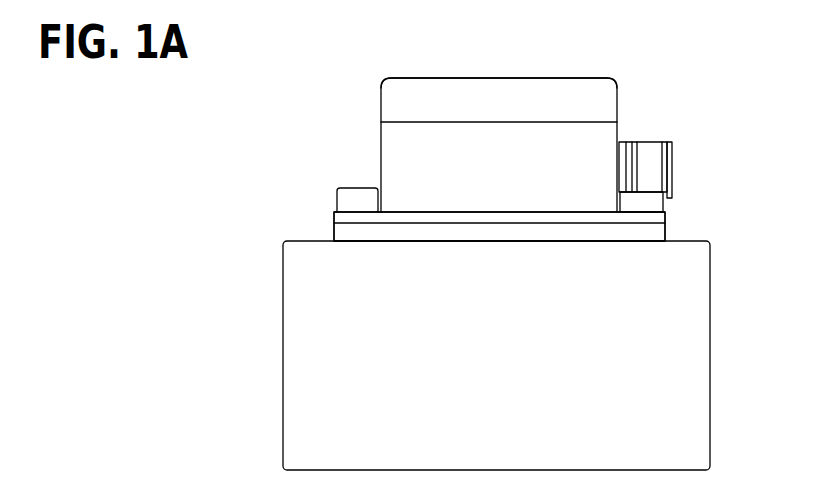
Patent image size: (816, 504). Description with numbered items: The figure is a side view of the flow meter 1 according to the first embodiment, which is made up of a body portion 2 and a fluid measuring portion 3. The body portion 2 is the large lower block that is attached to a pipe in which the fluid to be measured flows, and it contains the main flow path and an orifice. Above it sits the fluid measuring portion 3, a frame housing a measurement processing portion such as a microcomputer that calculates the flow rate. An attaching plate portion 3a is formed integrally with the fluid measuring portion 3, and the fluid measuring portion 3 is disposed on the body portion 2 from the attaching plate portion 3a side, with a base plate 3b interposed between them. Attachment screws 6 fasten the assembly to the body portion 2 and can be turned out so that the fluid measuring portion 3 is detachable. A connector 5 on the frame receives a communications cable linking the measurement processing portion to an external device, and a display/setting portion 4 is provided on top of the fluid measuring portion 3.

The flow meter 1 is at (712, 100).
The body portion 2 is at (283, 397).
The fluid measuring portion 3 is at (381, 150).
The attaching plate portion 3a is at (665, 216).
The base plate 3b is at (334, 237).
The display/setting portion 4 is at (584, 78).
The connector 5 is at (648, 142).
The attachment screws 6 is at (337, 196).